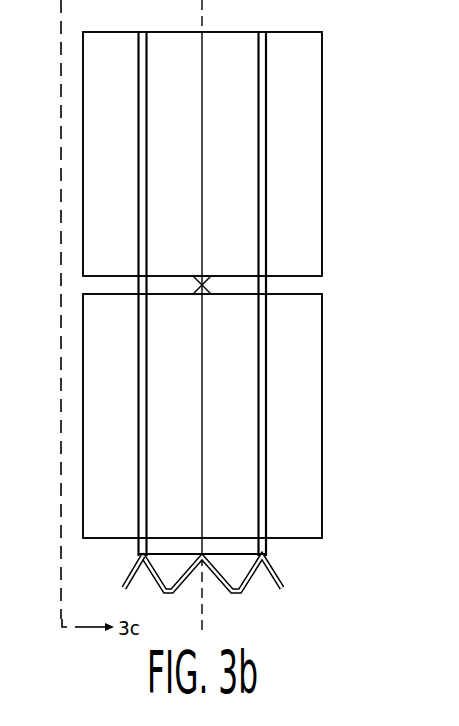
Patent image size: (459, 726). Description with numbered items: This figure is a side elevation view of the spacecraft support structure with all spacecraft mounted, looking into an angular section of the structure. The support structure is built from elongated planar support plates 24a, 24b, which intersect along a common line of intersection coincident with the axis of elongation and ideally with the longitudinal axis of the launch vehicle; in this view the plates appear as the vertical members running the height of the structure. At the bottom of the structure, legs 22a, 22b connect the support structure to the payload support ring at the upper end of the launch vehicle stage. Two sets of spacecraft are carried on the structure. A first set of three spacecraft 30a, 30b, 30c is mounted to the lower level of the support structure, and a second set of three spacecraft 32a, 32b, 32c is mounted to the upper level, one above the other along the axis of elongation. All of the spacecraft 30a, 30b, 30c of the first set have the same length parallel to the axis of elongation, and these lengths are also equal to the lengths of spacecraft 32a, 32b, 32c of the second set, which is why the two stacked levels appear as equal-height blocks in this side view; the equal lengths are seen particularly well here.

The spacecraft 32a is at (308, 142).
The spacecraft 32b is at (233, 178).
The spacecraft 32c is at (112, 215).
The spacecraft 30a is at (235, 385).
The spacecraft 30b is at (105, 417).
The spacecraft 30c is at (292, 456).
The support plate 24a is at (250, 546).
The support plate 24b is at (150, 546).
The leg 22a is at (180, 584).
The leg 22b is at (125, 588).